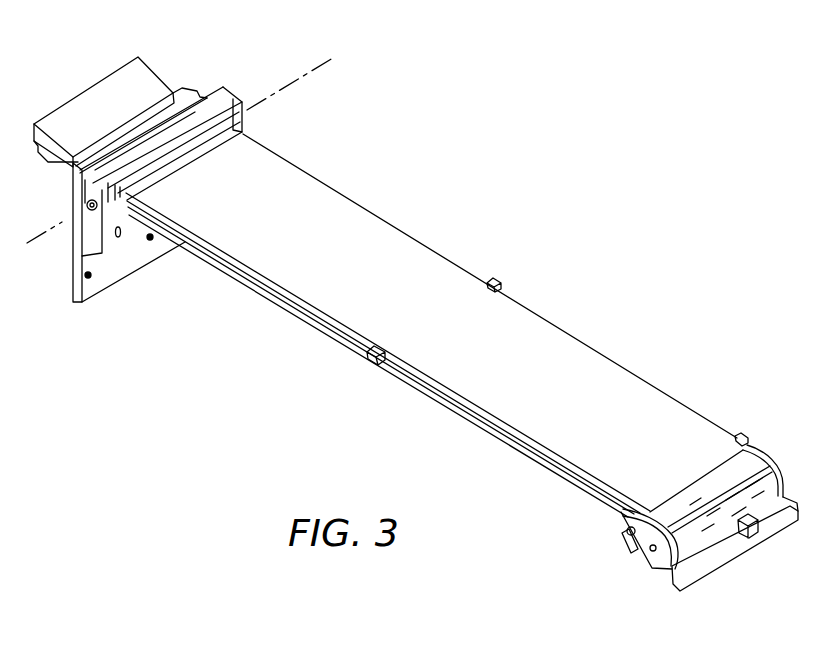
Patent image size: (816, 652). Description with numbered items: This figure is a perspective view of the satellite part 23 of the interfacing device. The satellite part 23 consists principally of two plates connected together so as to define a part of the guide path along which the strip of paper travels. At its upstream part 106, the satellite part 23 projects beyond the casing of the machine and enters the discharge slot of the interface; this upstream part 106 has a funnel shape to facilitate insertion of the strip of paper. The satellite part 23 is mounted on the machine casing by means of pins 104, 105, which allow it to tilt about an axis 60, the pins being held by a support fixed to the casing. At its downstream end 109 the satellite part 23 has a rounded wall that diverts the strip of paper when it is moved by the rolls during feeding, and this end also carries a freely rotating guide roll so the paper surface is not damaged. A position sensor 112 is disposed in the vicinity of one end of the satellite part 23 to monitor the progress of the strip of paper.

The satellite part 23 is at (458, 253).
The axis of rotation 60 is at (303, 73).
The pin 104 is at (252, 114).
The pin 105 is at (95, 211).
The upstream part 106 is at (145, 78).
The downstream end 109 is at (745, 474).
The position sensor 112 is at (757, 543).